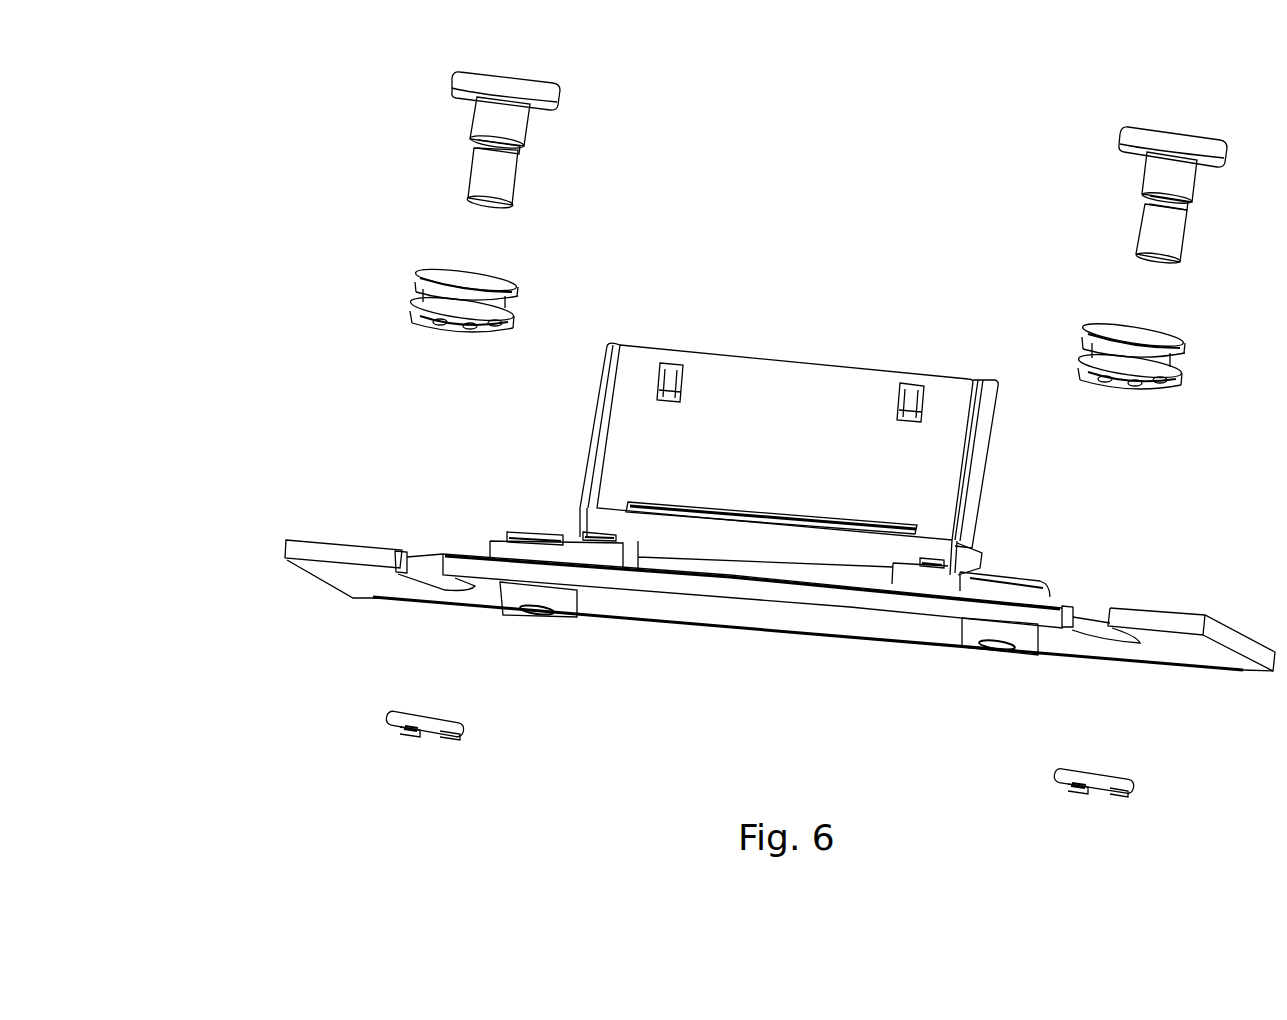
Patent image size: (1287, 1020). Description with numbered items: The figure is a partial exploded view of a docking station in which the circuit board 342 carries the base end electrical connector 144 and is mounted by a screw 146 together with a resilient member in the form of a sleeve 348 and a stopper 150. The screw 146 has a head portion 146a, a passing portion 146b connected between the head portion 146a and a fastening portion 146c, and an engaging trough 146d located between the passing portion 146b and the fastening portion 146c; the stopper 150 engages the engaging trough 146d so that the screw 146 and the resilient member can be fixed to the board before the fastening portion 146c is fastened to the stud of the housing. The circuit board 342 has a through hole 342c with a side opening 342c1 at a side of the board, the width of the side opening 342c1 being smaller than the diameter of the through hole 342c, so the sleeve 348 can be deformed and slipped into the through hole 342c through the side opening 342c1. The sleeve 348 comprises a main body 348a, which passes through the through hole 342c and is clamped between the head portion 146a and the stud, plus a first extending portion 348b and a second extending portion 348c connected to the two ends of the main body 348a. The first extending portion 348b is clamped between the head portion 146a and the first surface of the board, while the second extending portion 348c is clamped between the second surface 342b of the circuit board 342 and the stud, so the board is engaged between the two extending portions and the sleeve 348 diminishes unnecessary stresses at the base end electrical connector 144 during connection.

The base end electrical connector 144 is at (797, 363).
The screw 146 is at (262, 60).
The head portion 146a is at (453, 82).
The passing portion 146b is at (477, 122).
The fastening portion 146c is at (472, 172).
The engaging trough 146d is at (522, 148).
The sleeve 348 is at (238, 238).
The main body 348a is at (437, 292).
The first extending portion 348b is at (423, 283).
The second extending portion 348c is at (423, 302).
The circuit board 342 is at (285, 547).
The second surface 342b is at (748, 613).
The through hole 342c is at (421, 583).
The side opening 342c1 is at (402, 549).
The stopper 150 is at (388, 720).